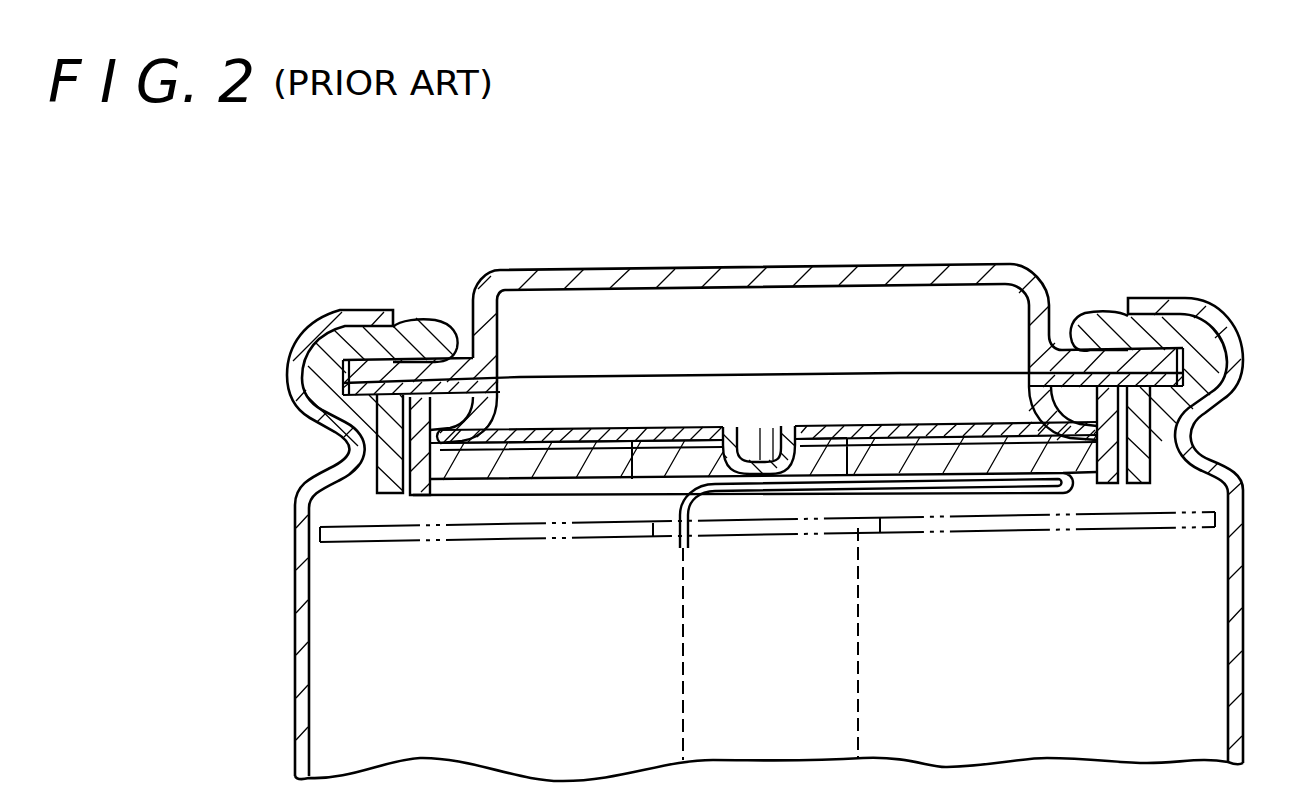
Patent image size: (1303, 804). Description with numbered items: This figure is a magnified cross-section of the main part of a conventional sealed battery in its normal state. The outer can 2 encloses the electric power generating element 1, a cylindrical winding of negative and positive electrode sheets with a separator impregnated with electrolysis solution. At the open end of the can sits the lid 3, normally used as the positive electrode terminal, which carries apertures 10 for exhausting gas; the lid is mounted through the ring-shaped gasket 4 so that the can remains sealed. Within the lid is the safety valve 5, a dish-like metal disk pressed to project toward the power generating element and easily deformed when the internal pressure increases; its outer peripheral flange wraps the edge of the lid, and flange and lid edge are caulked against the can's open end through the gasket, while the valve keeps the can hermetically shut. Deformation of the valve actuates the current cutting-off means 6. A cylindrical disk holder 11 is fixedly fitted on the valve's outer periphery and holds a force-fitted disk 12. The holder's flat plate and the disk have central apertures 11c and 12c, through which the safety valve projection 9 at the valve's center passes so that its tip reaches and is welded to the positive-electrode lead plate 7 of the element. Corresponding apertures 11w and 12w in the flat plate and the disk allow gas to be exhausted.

The electric power generating element 1 is at (1197, 680).
The outer can 2 is at (1246, 604).
The lid 3 is at (781, 266).
The ring-shaped gasket 4 is at (1210, 362).
The safety valve 5 is at (558, 427).
The current cutting-off means 6 is at (751, 482).
The lead plate 7 is at (950, 496).
The safety valve projection 9 is at (771, 458).
The apertures 10 is at (488, 293).
The cylindrical disk holder 11 is at (1107, 422).
The aperture 11w is at (597, 445).
The central aperture 11c is at (723, 430).
The disk 12 is at (1083, 460).
The aperture 12w is at (580, 467).
The central aperture 12c is at (792, 482).